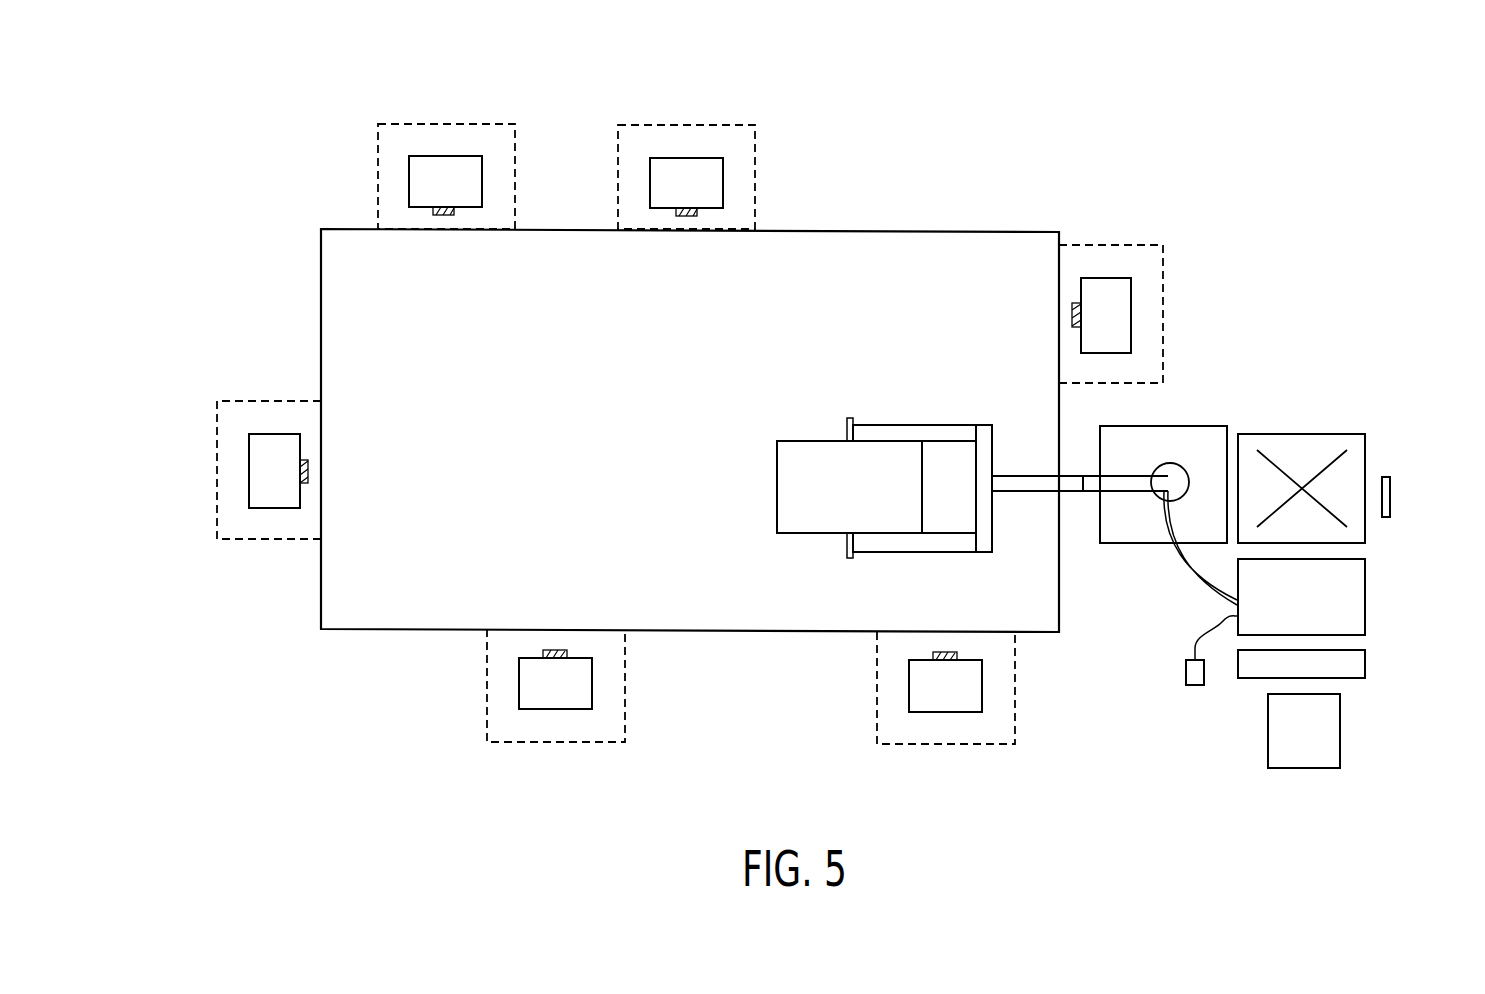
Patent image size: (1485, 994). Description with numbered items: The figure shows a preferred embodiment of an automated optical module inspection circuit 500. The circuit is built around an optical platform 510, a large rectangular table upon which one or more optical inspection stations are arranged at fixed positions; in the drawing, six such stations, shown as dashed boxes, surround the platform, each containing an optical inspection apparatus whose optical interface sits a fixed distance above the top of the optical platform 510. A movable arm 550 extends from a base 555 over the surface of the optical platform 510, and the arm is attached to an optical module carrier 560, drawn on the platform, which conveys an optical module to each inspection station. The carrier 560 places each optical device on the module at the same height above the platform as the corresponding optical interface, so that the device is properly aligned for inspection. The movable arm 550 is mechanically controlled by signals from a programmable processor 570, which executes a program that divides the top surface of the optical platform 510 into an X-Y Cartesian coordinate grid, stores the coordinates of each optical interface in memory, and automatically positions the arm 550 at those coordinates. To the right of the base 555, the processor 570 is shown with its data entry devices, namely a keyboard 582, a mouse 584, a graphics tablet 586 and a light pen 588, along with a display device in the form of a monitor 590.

The optical module inspection circuit 500 is at (1310, 171).
The optical platform 510 is at (298, 633).
The movable arm 550 is at (1078, 505).
The base 555 is at (1182, 412).
The optical module carrier 560 is at (805, 420).
The programmable processor 570 is at (1380, 594).
The keyboard 582 is at (1377, 665).
The mouse 584 is at (1180, 672).
The graphics tablet 586 is at (1352, 733).
The light pen 588 is at (1400, 486).
The monitor 590 is at (1317, 428).